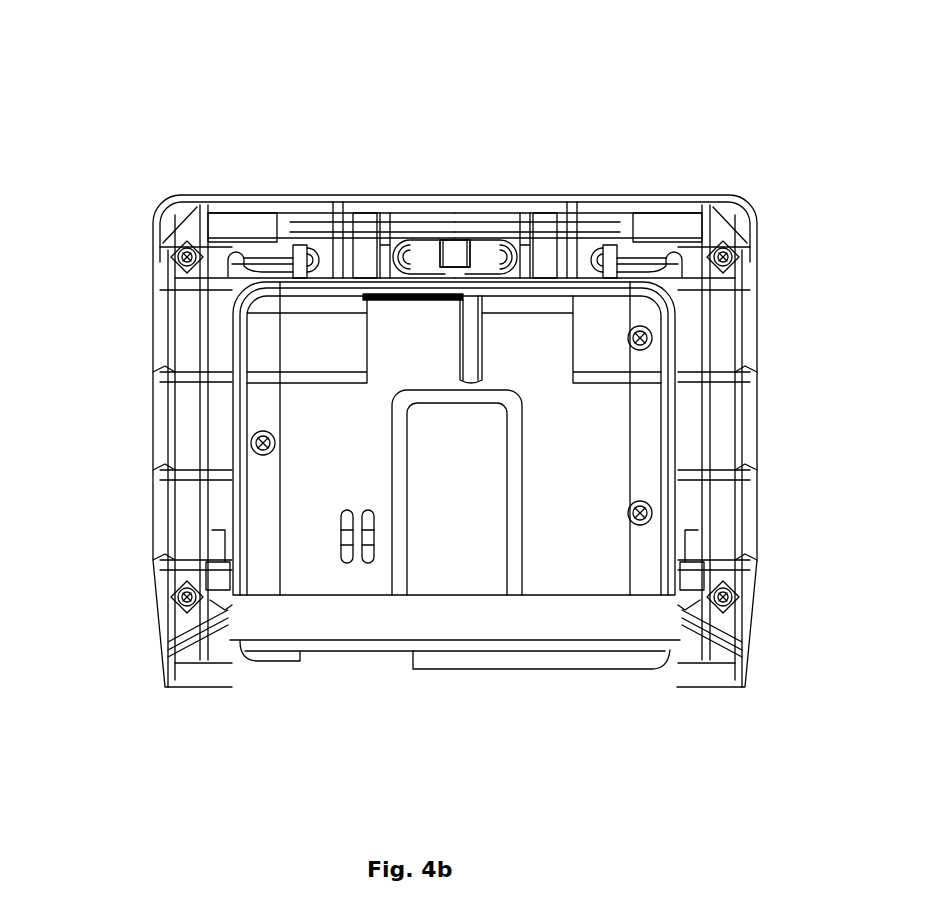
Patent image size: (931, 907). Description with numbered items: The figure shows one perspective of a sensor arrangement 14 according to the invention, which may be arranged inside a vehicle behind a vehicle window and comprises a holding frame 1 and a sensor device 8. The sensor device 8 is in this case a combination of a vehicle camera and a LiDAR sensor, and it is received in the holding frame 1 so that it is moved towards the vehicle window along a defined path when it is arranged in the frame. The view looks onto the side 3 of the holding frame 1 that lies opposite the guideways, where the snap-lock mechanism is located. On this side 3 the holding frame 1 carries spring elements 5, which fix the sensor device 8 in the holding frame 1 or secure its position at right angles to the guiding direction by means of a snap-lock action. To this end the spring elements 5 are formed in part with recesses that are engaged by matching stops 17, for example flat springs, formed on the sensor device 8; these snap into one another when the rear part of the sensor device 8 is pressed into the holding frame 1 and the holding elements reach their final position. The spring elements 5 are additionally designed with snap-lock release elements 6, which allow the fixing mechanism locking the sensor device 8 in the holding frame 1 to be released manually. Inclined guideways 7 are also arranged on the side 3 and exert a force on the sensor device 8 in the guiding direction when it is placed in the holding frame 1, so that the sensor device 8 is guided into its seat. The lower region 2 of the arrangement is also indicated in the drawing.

The sensor arrangement 14 is at (68, 162).
The holding frame 1 is at (747, 347).
The lower region of housing 2 is at (460, 700).
The side of the holding frame 3 is at (460, 160).
The spring element 5 is at (265, 268).
The snap-lock release element 6 is at (307, 260).
The inclined guideway 7 is at (358, 260).
The sensor device 8 is at (318, 420).
The stop 17 is at (342, 275).